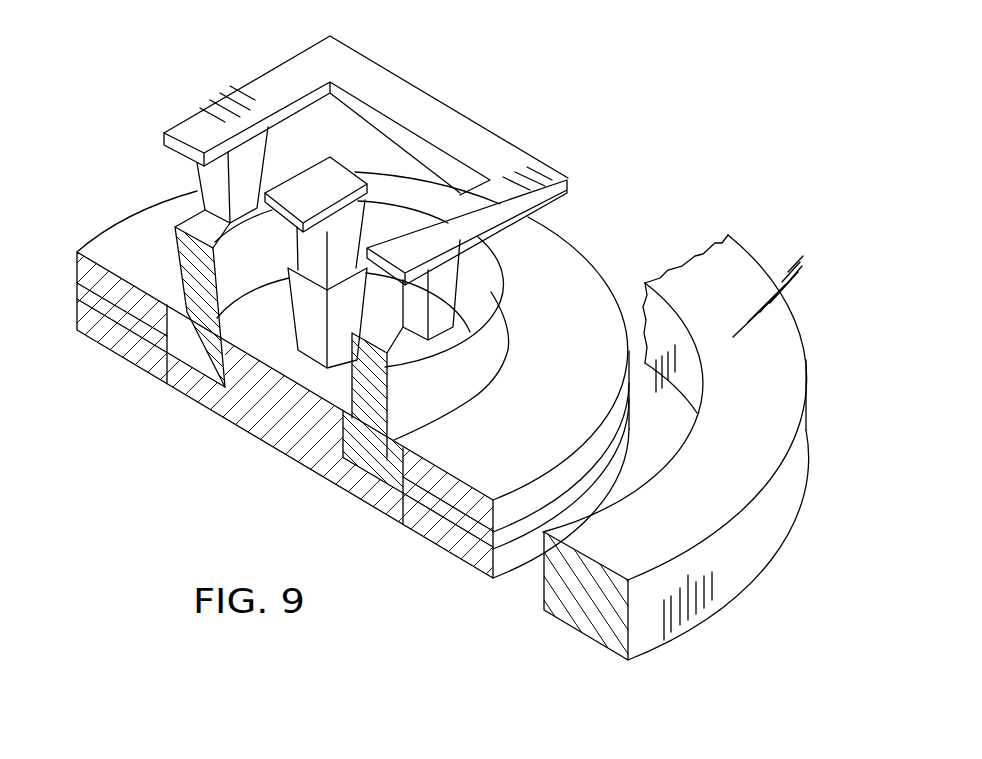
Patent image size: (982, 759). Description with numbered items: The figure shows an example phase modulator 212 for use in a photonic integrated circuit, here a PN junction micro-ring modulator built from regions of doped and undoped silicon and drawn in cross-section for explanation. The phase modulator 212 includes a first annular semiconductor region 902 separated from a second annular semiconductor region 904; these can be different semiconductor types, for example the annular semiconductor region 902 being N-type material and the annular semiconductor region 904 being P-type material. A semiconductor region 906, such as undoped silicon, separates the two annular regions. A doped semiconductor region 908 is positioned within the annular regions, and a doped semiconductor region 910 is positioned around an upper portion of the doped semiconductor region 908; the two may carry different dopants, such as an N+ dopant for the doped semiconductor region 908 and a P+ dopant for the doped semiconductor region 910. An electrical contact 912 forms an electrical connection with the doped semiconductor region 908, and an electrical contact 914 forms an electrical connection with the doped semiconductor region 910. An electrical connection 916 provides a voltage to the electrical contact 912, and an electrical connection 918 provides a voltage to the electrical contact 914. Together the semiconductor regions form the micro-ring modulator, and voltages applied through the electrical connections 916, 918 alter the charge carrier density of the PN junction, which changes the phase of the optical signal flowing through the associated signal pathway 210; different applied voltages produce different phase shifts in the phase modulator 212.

The signal pathway 210 is at (769, 553).
The phase modulator 212 is at (697, 165).
The first annular semiconductor region 902 is at (440, 535).
The second annular semiconductor region 904 is at (561, 238).
The semiconductor region 906 is at (123, 320).
The doped semiconductor region 908 is at (250, 415).
The doped semiconductor region 910 is at (355, 490).
The electrical contact 912 is at (347, 310).
The electrical contact 914 is at (175, 263).
The electrical connection 916 is at (312, 158).
The electrical connection 918 is at (437, 104).